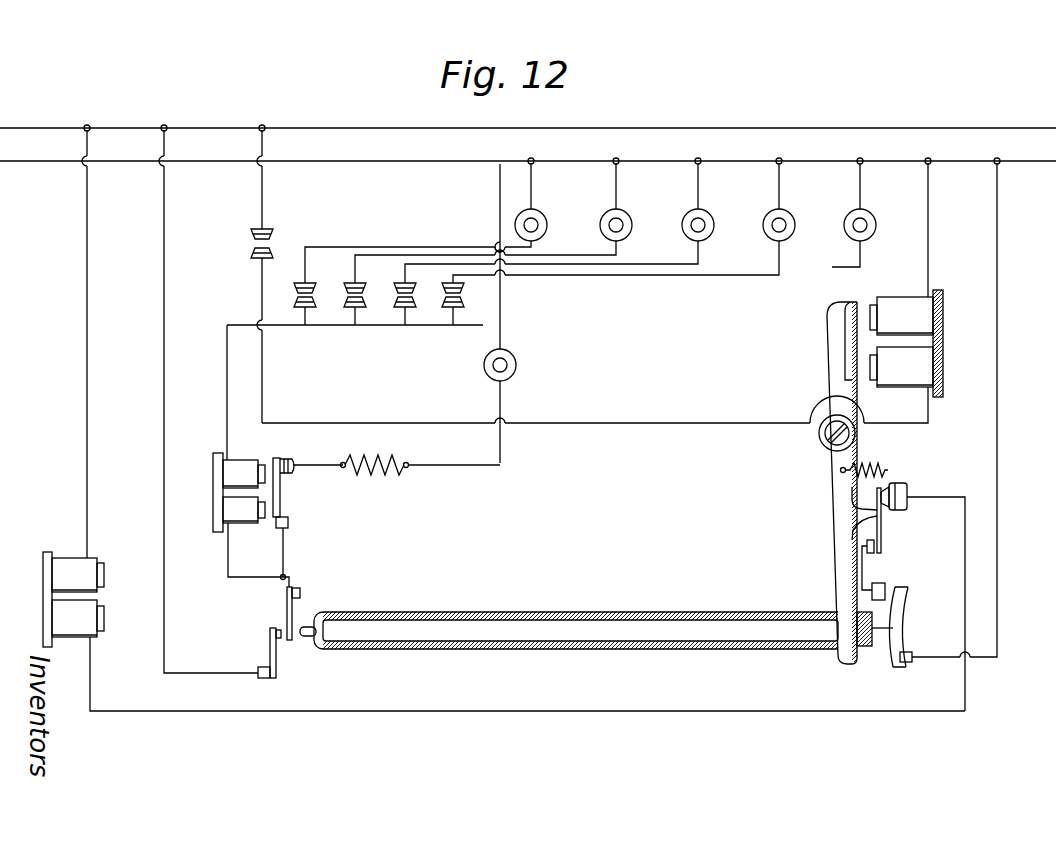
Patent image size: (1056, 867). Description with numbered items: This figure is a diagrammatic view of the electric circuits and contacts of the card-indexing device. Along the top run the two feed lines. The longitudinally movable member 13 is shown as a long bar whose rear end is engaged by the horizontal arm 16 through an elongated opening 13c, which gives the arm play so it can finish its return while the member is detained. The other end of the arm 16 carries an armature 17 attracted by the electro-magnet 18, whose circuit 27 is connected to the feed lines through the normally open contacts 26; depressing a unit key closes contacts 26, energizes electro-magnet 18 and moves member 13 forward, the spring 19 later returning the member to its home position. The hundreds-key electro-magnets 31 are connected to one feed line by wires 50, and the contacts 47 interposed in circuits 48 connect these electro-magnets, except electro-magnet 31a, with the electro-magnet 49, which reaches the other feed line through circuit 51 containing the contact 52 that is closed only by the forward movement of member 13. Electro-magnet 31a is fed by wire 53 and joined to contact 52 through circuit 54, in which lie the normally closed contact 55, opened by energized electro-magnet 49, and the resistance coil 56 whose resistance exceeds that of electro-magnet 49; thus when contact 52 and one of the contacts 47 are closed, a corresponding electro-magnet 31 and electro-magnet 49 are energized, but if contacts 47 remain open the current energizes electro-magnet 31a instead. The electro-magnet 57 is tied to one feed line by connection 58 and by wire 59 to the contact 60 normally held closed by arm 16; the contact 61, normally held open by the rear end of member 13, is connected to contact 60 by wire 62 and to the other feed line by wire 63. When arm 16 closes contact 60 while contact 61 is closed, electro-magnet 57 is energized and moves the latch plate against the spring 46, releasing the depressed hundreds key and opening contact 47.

The longitudinally movable member 13 is at (637, 613).
The elongated opening 13c is at (862, 650).
The horizontal arm 16 is at (840, 501).
The armature 17 is at (848, 342).
The electro-magnet 18 is at (932, 364).
The spring 19 is at (884, 474).
The contacts 26 is at (268, 232).
The circuit 27 is at (637, 421).
The electro-magnets 31 is at (546, 233).
The electro-magnet 31a is at (516, 372).
The spring 46 is at (439, 266).
The contacts 47 is at (312, 288).
The circuits 48 is at (227, 392).
The electro-magnet 49 is at (232, 518).
The wires 50 is at (608, 191).
The circuit 51 is at (164, 442).
The contact 52 is at (292, 642).
The wire 53 is at (510, 307).
The circuit 54 is at (462, 468).
The contact 55 is at (292, 472).
The resistance coil 56 is at (376, 472).
The electro-magnet 57 is at (62, 557).
The connection 58 is at (85, 346).
The wire 59 is at (478, 713).
The contact 60 is at (910, 491).
The contact 61 is at (888, 592).
The wire 62 is at (873, 574).
The wire 63 is at (999, 553).